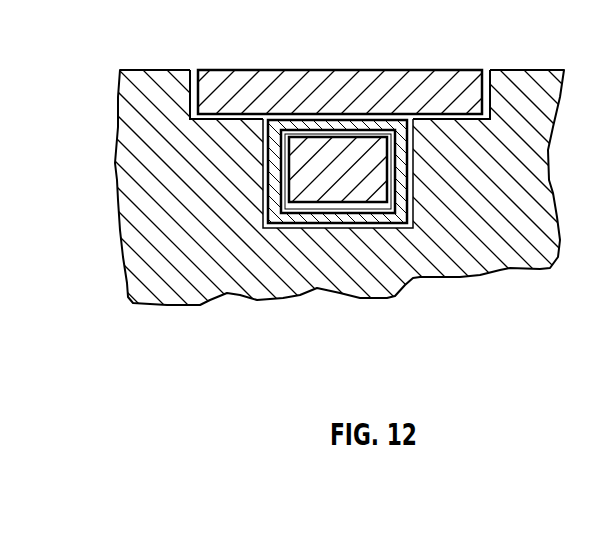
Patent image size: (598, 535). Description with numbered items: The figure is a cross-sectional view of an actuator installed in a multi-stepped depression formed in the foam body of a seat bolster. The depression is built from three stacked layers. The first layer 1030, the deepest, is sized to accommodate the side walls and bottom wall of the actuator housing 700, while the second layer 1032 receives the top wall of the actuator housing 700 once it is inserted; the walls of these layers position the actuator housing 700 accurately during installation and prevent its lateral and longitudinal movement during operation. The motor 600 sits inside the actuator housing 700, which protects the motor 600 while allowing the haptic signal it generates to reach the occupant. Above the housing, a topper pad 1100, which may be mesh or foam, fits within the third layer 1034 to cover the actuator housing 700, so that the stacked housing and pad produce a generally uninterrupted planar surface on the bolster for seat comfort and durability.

The first layer 1030 is at (264, 187).
The second layer 1032 is at (264, 137).
The third layer 1034 is at (190, 83).
The topper pad 1100 is at (293, 78).
The actuator housing 700 is at (291, 215).
The motor 600 is at (368, 193).